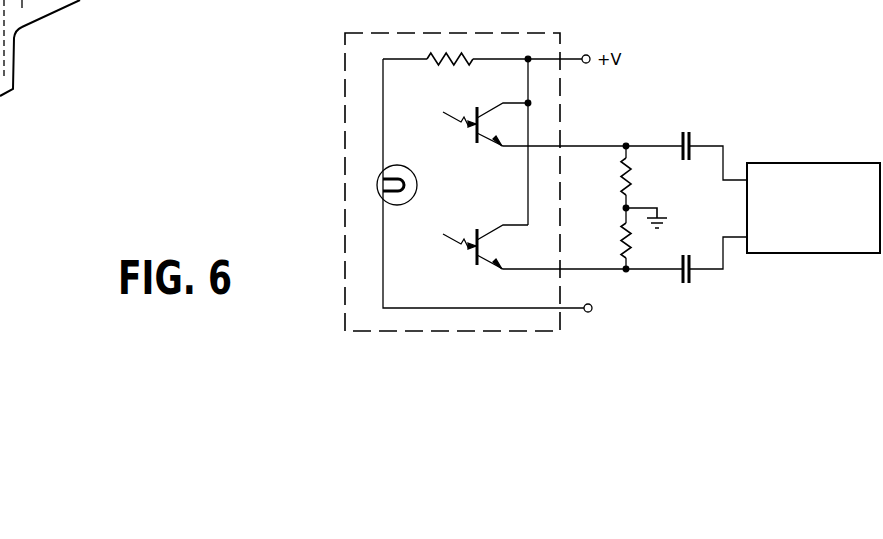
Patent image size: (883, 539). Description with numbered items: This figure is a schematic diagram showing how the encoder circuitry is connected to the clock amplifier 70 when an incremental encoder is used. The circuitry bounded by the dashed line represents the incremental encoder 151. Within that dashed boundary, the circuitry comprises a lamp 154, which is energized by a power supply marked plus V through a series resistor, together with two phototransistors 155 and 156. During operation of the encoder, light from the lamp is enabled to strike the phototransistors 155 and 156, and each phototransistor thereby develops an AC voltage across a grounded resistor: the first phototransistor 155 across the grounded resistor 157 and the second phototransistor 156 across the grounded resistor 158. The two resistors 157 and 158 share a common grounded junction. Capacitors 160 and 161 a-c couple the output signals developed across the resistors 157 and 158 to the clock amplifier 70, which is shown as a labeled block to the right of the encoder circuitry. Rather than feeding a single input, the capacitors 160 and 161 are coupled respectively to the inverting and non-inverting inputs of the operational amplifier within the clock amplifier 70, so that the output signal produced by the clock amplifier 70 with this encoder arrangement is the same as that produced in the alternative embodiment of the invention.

The clock amplifier 70 is at (820, 163).
The incremental encoder 151 is at (345, 290).
The lamp 154 is at (410, 189).
The phototransistor 155 is at (479, 116).
The phototransistor 156 is at (479, 238).
The grounded resistor 157 is at (620, 179).
The grounded resistor 158 is at (620, 238).
The capacitor 160 is at (690, 140).
The capacitor 161 is at (692, 278).